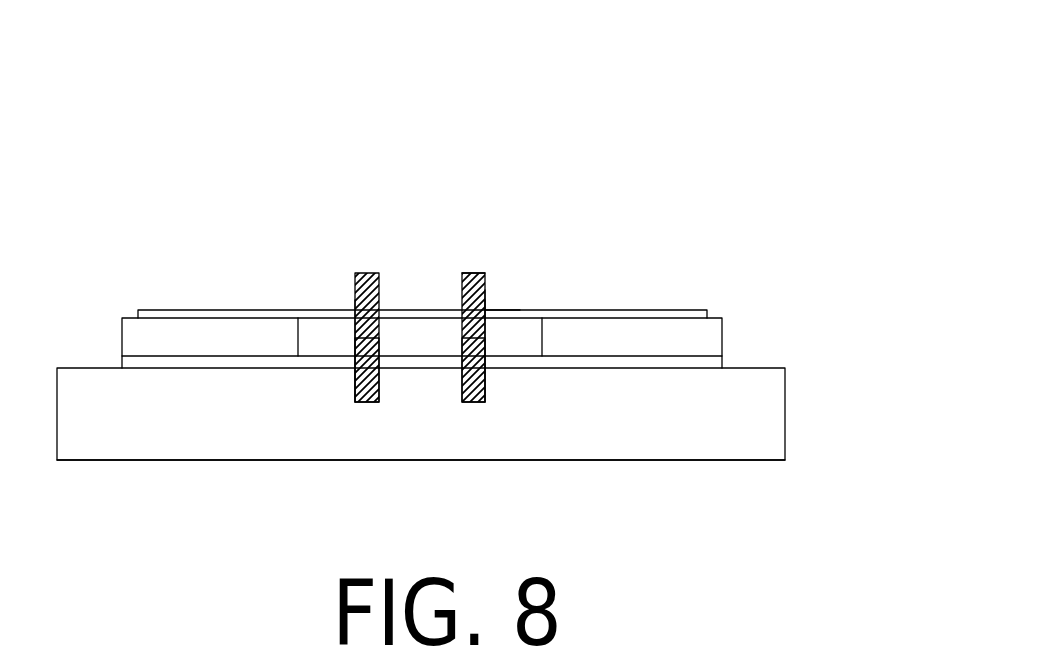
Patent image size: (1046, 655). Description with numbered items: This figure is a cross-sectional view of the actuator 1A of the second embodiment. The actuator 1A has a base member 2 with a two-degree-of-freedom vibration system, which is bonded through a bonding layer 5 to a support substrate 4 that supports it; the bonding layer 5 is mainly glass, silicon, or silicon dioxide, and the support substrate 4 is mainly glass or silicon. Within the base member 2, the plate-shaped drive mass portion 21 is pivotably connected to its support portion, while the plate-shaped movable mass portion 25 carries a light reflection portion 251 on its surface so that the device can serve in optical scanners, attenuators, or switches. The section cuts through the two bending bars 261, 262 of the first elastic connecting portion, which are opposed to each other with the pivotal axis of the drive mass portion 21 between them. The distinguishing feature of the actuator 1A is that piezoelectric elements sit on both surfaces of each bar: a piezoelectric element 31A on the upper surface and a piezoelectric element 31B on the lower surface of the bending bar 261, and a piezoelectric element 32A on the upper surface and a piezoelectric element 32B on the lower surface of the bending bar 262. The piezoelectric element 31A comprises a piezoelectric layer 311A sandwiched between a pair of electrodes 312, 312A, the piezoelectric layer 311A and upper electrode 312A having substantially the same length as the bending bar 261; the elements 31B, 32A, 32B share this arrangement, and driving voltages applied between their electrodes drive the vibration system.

The actuator 1A is at (680, 109).
The base member 2 is at (725, 338).
The support substrate 4 is at (773, 418).
The bonding layer 5 is at (710, 365).
The drive mass portion 21 is at (318, 317).
The movable mass portion 25 is at (620, 333).
The light reflection portion 251 is at (200, 308).
The piezoelectric element 31A is at (627, 153).
The piezoelectric layer 311A is at (487, 306).
The electrode 312 is at (497, 312).
The upper electrode 312A is at (473, 273).
The piezoelectric element 31B is at (473, 402).
The piezoelectric element 32A is at (358, 273).
The piezoelectric element 32B is at (364, 402).
The bending bar 261 is at (486, 338).
The bending bar 262 is at (354, 357).